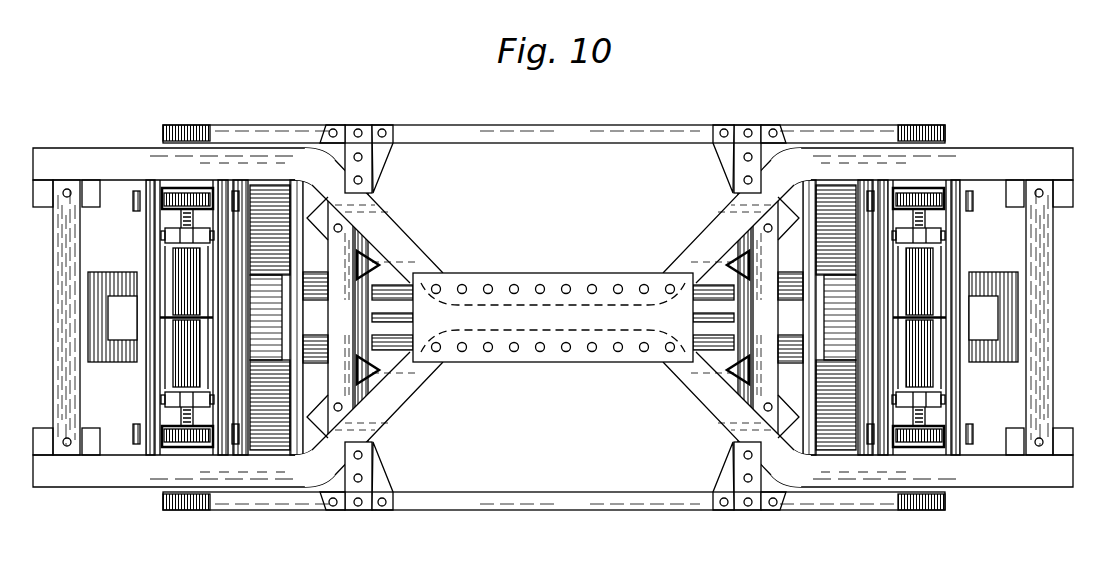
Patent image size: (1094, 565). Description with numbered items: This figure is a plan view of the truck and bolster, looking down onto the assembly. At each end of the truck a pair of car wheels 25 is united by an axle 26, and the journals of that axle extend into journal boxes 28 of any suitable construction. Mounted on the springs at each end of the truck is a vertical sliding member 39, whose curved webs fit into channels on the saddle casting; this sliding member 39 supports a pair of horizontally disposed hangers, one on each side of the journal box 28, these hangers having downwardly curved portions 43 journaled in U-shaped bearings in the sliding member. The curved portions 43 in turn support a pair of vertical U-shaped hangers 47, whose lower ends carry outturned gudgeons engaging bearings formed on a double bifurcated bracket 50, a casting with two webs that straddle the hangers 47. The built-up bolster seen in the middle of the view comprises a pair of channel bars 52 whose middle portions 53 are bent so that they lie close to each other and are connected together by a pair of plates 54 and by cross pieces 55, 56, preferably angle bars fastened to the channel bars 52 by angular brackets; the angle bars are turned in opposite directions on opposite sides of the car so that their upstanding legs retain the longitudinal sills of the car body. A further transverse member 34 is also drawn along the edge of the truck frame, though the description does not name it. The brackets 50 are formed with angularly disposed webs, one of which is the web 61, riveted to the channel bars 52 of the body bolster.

The car wheels 25 is at (276, 430).
The axle 26 is at (395, 330).
The journal boxes 28 is at (118, 362).
The transom beam 34 is at (255, 133).
The vertical sliding member 39 is at (200, 348).
The downwardly curved portions 43 is at (178, 214).
The vertical U-shaped hangers 47 is at (194, 187).
The double bifurcated bracket 50 is at (157, 386).
The channel bars 52 is at (117, 142).
The middle portions 53 is at (508, 283).
The plates 54 is at (550, 345).
The cross piece 55 is at (58, 252).
The cross piece 56 is at (340, 252).
The angularly disposed web 61 is at (156, 190).